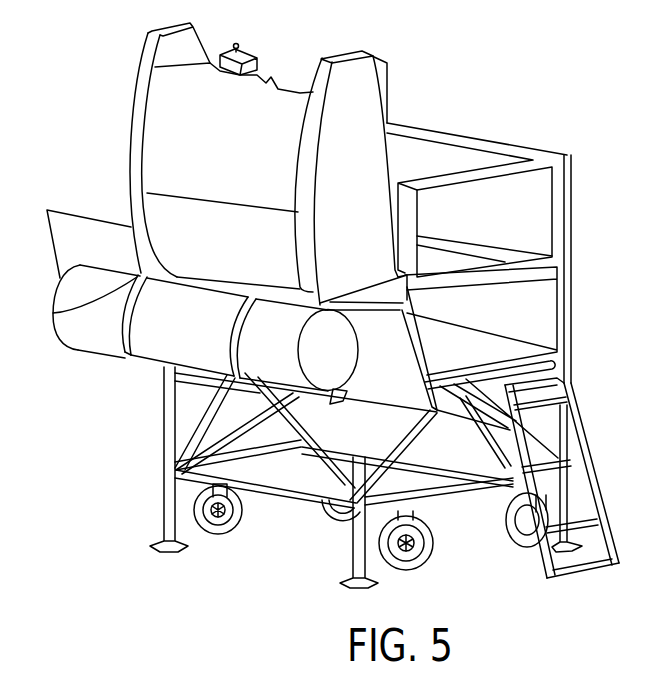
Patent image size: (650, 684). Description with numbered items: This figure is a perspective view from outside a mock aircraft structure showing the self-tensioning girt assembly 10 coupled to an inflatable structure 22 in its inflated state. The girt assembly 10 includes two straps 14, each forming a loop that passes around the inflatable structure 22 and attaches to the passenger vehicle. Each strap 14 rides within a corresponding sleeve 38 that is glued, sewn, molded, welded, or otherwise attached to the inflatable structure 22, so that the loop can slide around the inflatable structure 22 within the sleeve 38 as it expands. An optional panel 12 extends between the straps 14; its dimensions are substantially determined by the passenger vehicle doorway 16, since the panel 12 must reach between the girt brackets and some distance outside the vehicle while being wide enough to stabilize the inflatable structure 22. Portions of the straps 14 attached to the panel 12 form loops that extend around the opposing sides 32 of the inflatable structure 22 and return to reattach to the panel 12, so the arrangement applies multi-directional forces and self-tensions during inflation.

The self-tensioning girt assembly 10 is at (114, 230).
The panel 12 is at (221, 281).
The strap 14 is at (53, 313).
The passenger vehicle doorway 16 is at (322, 197).
The inflatable structure 22 is at (292, 327).
The opposing sides of the inflatable structure 32 is at (93, 337).
The sleeve 38 is at (128, 358).